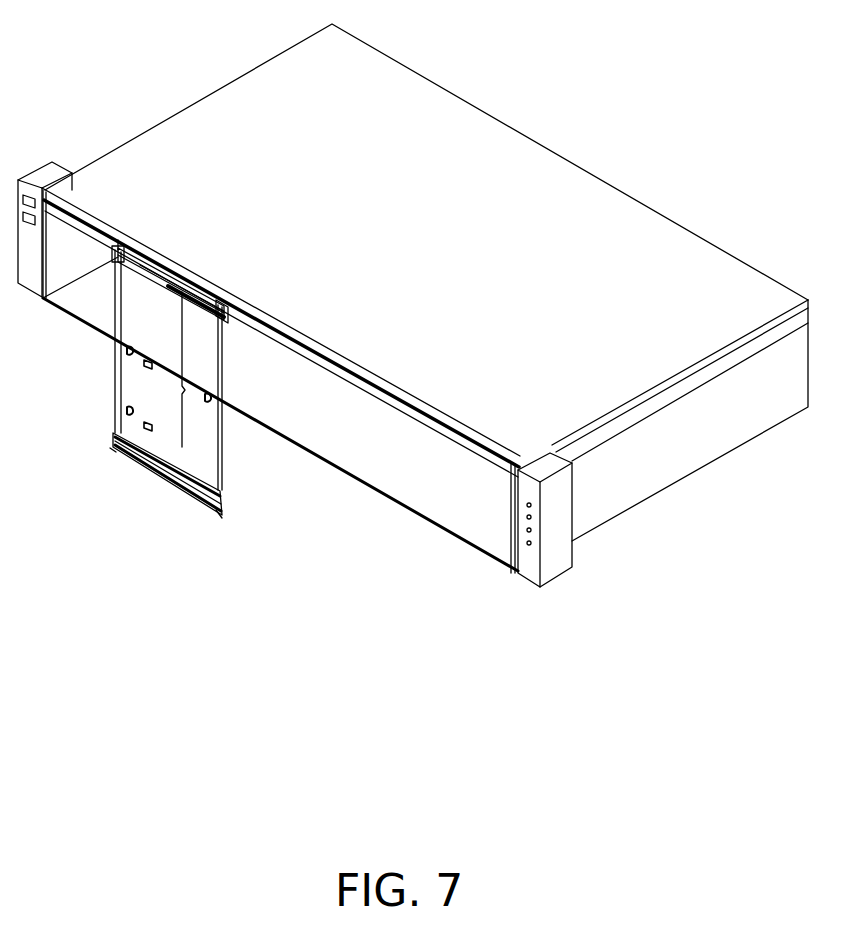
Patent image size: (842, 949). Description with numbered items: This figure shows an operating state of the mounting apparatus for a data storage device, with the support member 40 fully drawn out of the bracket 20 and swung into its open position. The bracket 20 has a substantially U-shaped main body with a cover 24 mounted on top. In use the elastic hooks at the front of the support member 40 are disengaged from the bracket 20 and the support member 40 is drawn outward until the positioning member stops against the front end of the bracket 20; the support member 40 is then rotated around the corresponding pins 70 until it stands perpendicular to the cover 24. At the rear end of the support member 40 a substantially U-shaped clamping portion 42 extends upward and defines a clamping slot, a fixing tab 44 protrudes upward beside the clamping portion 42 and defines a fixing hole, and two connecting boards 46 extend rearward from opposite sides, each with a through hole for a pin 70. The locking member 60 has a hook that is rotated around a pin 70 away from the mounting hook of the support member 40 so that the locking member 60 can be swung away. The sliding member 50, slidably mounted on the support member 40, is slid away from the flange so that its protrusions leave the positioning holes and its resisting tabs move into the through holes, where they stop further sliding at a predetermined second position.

The bracket 20 is at (413, 305).
The cover 24 is at (545, 216).
The support member 40 is at (119, 371).
The clamping portion 42 is at (168, 173).
The fixing tab 44 is at (195, 290).
The connecting board 46 is at (118, 255).
The sliding member 50 is at (204, 452).
The locking member 60 is at (183, 446).
The pin 70 is at (222, 313).